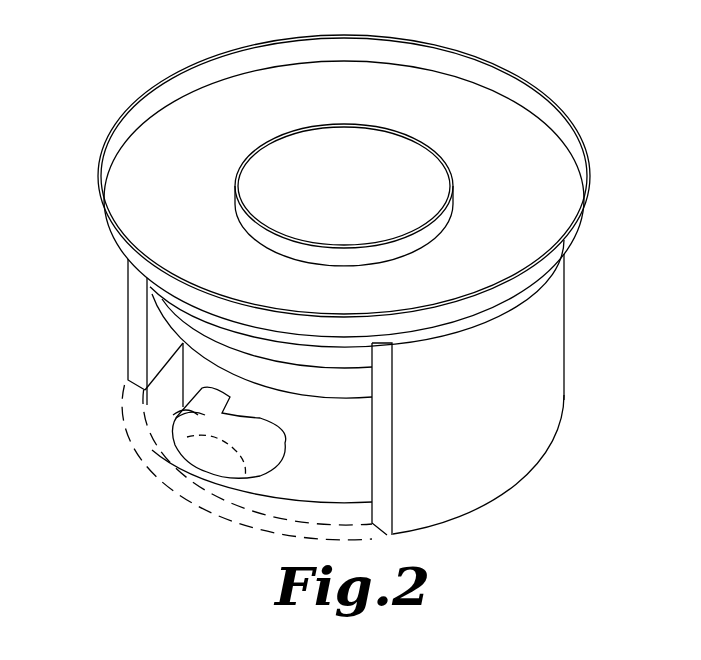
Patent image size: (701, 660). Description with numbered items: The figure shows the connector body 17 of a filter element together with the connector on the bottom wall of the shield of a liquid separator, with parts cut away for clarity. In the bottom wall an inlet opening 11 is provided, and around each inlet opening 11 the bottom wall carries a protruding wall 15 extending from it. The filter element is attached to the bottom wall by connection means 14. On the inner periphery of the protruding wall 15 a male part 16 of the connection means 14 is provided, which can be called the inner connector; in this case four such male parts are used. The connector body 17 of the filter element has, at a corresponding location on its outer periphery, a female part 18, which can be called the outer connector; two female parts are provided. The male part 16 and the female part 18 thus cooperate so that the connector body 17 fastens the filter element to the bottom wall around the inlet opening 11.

The inlet opening 11 is at (278, 503).
The connection means 14 is at (90, 369).
The protruding wall 15 is at (140, 302).
The male part 16 is at (220, 456).
The connector body 17 is at (237, 107).
The female part 18 is at (207, 403).